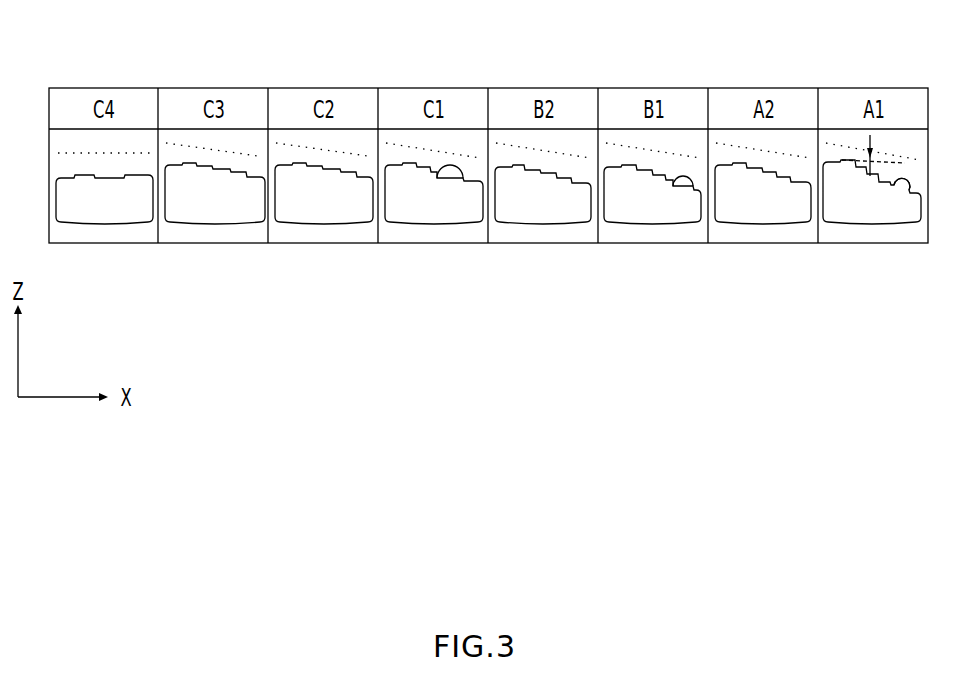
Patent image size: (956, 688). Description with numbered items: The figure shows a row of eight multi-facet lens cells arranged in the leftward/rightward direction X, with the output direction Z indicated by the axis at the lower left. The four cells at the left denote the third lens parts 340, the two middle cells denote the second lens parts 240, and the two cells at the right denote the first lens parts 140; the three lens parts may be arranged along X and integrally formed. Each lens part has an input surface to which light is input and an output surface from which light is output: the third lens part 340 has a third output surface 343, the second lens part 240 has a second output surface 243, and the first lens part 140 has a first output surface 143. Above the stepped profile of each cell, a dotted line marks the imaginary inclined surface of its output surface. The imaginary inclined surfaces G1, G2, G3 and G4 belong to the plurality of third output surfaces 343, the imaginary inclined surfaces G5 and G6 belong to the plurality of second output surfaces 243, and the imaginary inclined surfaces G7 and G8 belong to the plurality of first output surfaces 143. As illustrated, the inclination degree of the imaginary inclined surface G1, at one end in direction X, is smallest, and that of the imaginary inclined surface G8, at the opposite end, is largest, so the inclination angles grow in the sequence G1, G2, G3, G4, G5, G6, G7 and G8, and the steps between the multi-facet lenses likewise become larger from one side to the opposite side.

The imaginary inclined surface G1 is at (75, 150).
The imaginary inclined surface G2 is at (184, 146).
The imaginary inclined surface G3 is at (294, 146).
The imaginary inclined surface G4 is at (404, 146).
The imaginary inclined surface G5 is at (514, 146).
The imaginary inclined surface G6 is at (624, 146).
The imaginary inclined surface G7 is at (734, 146).
The imaginary inclined surface G8 is at (844, 146).
The third lens part 340 is at (433, 210).
The third output surface 343 is at (458, 186).
The second lens part 240 is at (653, 208).
The second output surface 243 is at (687, 190).
The first lens part 140 is at (873, 208).
The first output surface 143 is at (904, 196).